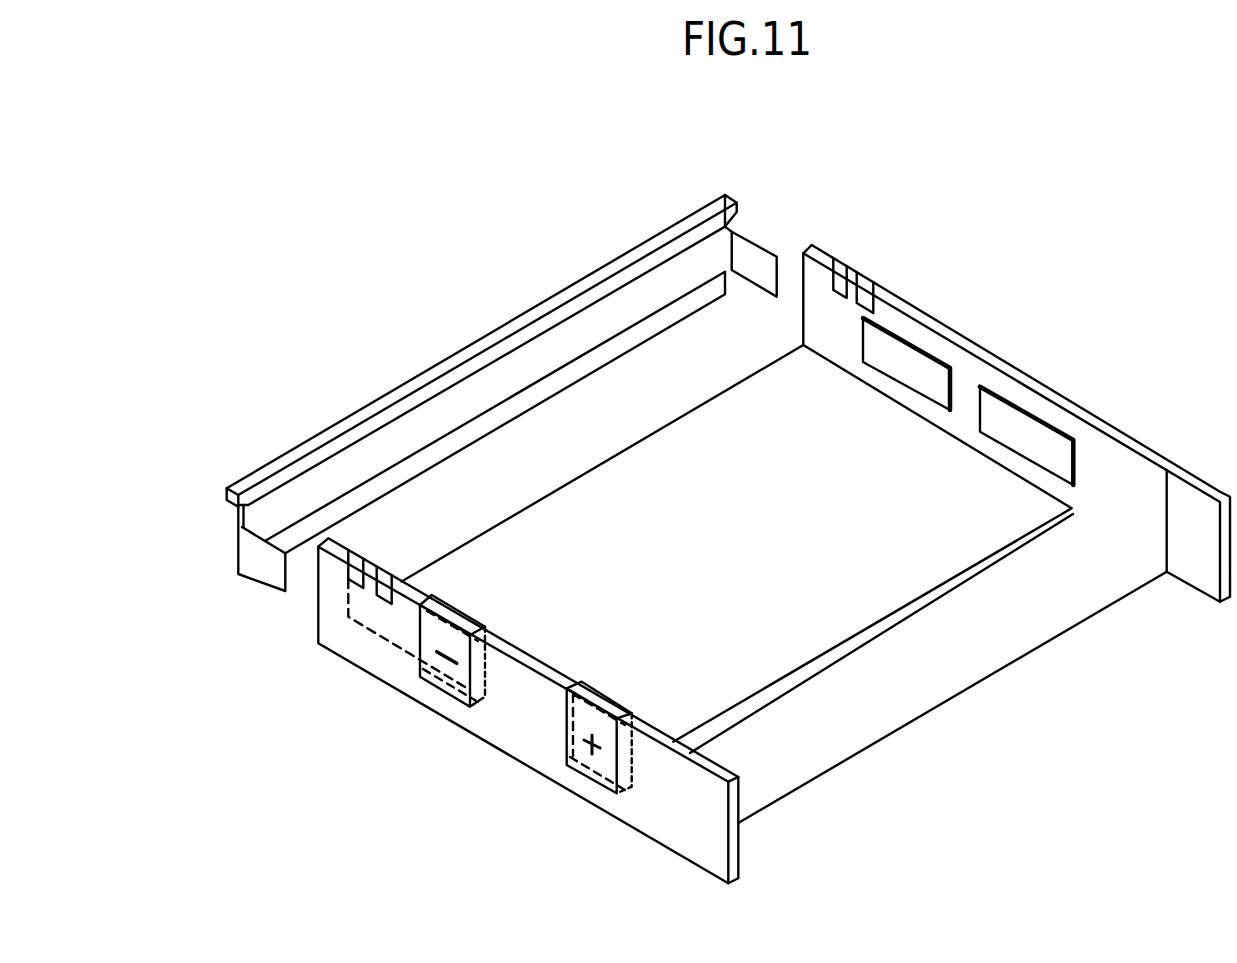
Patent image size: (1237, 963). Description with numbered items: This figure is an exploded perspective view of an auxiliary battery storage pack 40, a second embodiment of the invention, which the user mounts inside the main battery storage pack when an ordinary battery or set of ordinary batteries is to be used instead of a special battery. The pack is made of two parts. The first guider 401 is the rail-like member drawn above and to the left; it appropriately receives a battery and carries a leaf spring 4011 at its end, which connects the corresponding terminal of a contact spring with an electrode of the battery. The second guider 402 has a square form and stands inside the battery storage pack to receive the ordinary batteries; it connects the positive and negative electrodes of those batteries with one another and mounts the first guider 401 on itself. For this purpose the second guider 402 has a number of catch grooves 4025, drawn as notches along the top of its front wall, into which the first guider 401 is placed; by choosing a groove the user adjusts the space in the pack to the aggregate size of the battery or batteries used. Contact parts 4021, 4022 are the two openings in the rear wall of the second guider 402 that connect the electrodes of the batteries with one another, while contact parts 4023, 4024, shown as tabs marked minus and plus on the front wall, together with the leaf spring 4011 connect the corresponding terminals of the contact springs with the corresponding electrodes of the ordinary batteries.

The auxiliary battery storage pack 40 is at (404, 146).
The first guider 401 is at (527, 314).
The leaf spring 4011 is at (263, 558).
The second guider 402 is at (1095, 418).
The contact part 4021 is at (897, 348).
The contact part 4022 is at (1015, 425).
The contact part 4023 is at (440, 667).
The contact part 4024 is at (576, 768).
The catch groove 4025 is at (350, 568).